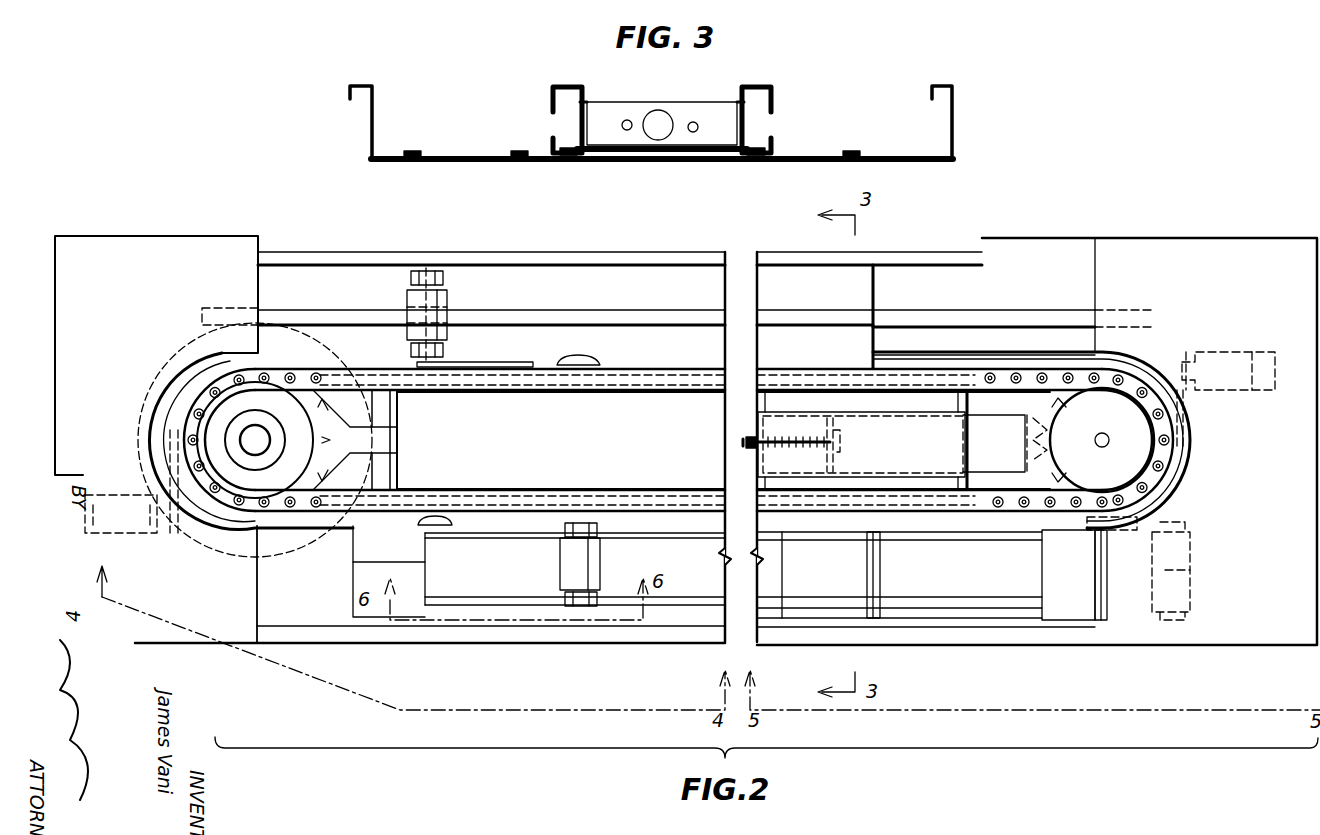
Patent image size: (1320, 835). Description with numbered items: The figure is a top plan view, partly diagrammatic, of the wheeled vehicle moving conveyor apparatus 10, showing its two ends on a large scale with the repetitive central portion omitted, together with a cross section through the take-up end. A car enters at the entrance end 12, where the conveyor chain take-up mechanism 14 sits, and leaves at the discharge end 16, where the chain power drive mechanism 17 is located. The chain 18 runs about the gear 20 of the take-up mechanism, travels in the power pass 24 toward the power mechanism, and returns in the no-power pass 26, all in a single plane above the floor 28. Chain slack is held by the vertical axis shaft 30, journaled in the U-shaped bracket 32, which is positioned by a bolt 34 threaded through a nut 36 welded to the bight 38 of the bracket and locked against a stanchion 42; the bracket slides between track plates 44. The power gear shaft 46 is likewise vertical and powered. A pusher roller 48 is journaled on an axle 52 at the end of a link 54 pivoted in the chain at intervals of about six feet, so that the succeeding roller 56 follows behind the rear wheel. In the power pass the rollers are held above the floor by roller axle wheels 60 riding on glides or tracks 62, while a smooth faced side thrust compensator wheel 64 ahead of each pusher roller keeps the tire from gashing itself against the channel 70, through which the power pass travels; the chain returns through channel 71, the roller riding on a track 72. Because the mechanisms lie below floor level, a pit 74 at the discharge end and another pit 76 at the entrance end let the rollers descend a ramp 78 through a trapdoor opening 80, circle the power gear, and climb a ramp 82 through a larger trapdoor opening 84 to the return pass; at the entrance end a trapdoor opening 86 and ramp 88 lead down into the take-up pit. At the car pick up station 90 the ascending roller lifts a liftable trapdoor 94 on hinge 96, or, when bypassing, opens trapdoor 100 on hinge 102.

In FIG. 2, the wheeled vehicle moving conveyor apparatus 10 is at (1098, 228).
In FIG. 2, the entrance end 12 is at (1262, 228).
In FIG. 2, the conveyor chain take-up mechanism 14 is at (924, 496).
In FIG. 2, the discharge end 16 is at (55, 225).
In FIG. 2, the chain power drive mechanism 17 is at (352, 445).
In FIG. 2, the chain 18 is at (1028, 380).
In FIG. 2, the gear 20 is at (1053, 478).
In FIG. 3, the power pass 24 is at (471, 94).
In FIG. 2, the power pass 24 is at (587, 500).
In FIG. 3, the no-power pass 26 is at (862, 94).
In FIG. 2, the no-power pass 26 is at (650, 393).
In FIG. 3, the floor 28 is at (462, 155).
In FIG. 2, the floor 28 is at (680, 630).
In FIG. 2, the vertical axis shaft 30 is at (1102, 440).
In FIG. 2, the U-shaped bracket 32 is at (995, 440).
In FIG. 2, the bolt 34 is at (742, 443).
In FIG. 2, the nut 36 is at (848, 450).
In FIG. 2, the bight 38 is at (826, 456).
In FIG. 2, the stanchion 42 is at (757, 420).
In FIG. 2, the track plates 44 is at (790, 410).
In FIG. 2, the power gear shaft 46 is at (260, 430).
In FIG. 2, the pusher roller 48 is at (406, 305).
In FIG. 2, the axle 52 is at (432, 268).
In FIG. 2, the link 54 is at (162, 458).
In FIG. 2, the succeeding roller 56 is at (1218, 352).
In FIG. 2, the roller axle wheels 60 is at (445, 278).
In FIG. 3, the glides or tracks 62 is at (414, 151).
In FIG. 2, the glides or tracks 62 is at (695, 596).
In FIG. 2, the side thrust compensator wheel 64 is at (578, 362).
In FIG. 3, the channel 70 is at (548, 101).
In FIG. 3, the channel 71 is at (771, 92).
In FIG. 3, the track 72 is at (852, 151).
In FIG. 2, the track 72 is at (400, 257).
In FIG. 2, the pit 74 is at (198, 607).
In FIG. 2, the pit 76 is at (1236, 502).
In FIG. 2, the ramp 78 is at (365, 565).
In FIG. 2, the trapdoor opening 80 is at (412, 630).
In FIG. 2, the ramp 82 is at (325, 316).
In FIG. 2, the trapdoor opening 84 is at (262, 282).
In FIG. 2, the trapdoor opening 86 is at (866, 301).
In FIG. 2, the ramp 88 is at (980, 318).
In FIG. 2, the car pick up station 90 is at (968, 620).
In FIG. 2, the liftable trapdoor 94 is at (1058, 612).
In FIG. 2, the hinge 96 is at (1108, 585).
In FIG. 2, the trapdoor 100 is at (855, 616).
In FIG. 2, the hinge 102 is at (880, 565).